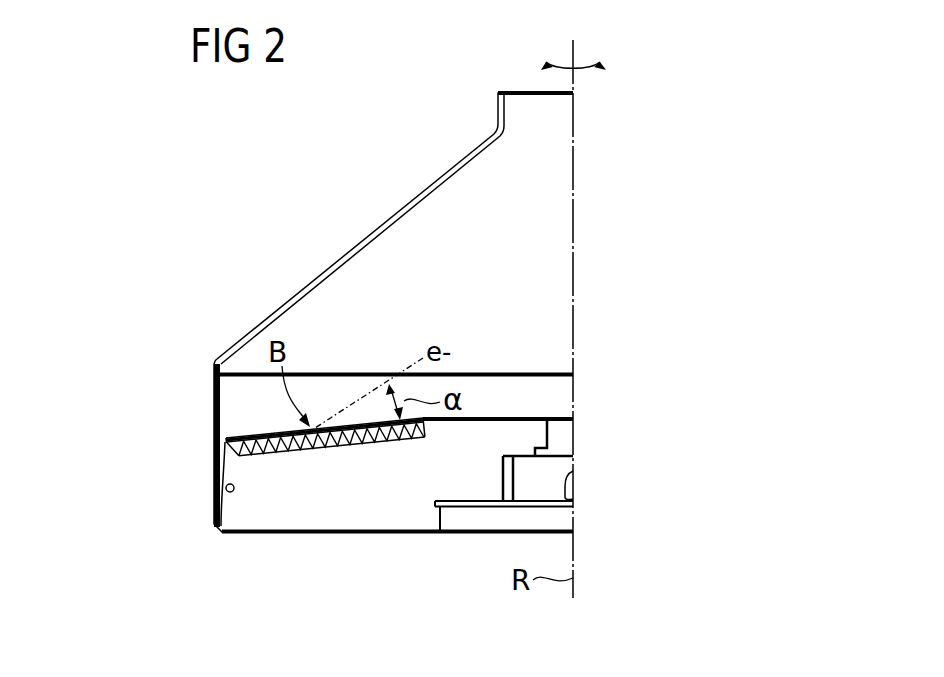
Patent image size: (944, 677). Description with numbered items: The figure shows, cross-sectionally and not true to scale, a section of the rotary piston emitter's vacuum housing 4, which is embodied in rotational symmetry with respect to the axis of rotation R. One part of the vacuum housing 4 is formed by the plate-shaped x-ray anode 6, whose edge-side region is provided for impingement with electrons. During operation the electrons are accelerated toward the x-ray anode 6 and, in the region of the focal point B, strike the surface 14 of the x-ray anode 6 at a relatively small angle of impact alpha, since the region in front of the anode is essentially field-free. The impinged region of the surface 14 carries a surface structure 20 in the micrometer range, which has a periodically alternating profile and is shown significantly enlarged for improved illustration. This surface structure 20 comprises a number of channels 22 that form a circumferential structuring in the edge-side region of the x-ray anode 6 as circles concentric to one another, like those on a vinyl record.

The vacuum housing 4 is at (343, 255).
The x-ray anode 6 is at (366, 522).
The surface 14 is at (272, 456).
The surface structure 20 is at (327, 506).
The channels 22 is at (318, 448).